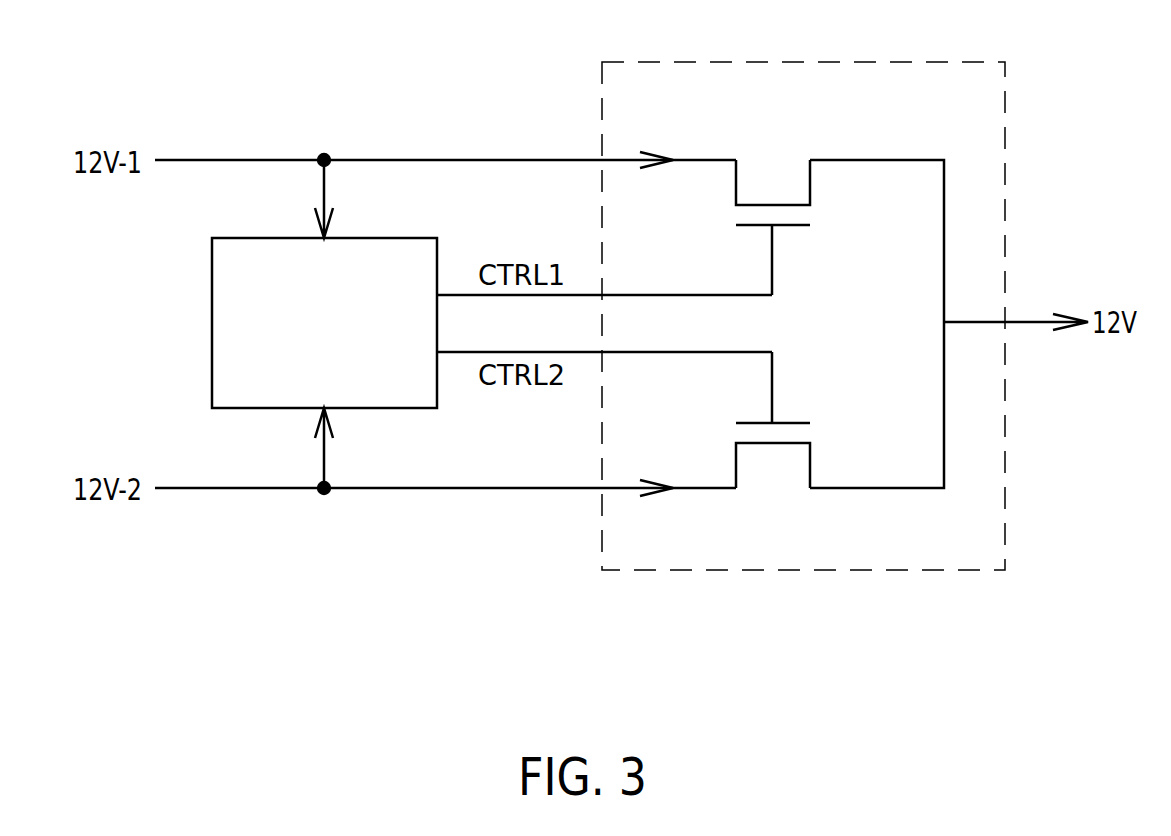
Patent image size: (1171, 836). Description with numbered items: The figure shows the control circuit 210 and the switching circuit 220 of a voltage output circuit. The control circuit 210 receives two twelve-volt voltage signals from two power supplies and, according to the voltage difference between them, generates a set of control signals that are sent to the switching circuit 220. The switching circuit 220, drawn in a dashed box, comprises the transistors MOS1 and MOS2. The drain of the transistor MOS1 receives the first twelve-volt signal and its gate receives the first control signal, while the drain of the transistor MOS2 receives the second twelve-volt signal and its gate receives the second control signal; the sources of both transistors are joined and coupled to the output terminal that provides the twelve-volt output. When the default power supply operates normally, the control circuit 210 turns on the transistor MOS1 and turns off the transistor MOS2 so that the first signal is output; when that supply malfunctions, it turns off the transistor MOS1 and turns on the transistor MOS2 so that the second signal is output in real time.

The control circuit 210 is at (390, 238).
The switching circuit 220 is at (812, 287).
The transistor MOS1 is at (774, 211).
The transistor MOS2 is at (774, 441).